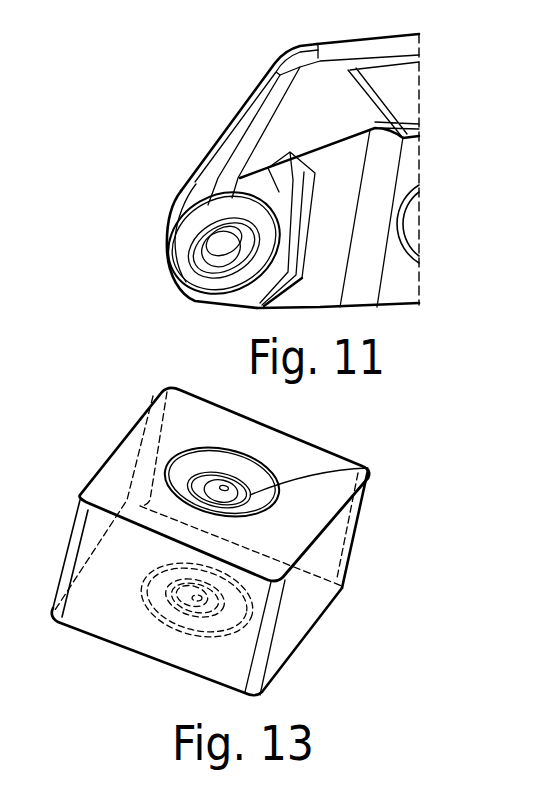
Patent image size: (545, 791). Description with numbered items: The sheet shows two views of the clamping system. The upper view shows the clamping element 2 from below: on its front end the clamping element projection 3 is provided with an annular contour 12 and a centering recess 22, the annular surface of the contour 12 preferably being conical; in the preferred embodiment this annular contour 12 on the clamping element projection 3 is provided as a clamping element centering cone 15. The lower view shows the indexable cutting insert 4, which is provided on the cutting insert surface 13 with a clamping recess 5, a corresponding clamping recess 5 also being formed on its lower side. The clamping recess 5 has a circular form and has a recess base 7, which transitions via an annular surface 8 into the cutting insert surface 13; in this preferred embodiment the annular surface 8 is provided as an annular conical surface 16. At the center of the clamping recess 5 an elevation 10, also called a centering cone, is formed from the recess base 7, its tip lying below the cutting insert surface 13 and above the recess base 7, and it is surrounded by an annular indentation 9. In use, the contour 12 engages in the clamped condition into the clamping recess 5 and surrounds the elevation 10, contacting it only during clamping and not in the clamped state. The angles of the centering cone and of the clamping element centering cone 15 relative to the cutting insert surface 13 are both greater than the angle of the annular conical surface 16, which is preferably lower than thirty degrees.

In FIG. 11, the clamping element 2 is at (397, 93).
In FIG. 11, the clamping element projection 3 is at (221, 178).
In FIG. 11, the threaded bore 22 is at (220, 244).
In FIG. 11, the annular contour 12 is at (190, 243).
In FIG. 11, the clamping element centering cone 15 is at (180, 270).
In FIG. 13, the clamping recess 5 is at (170, 456).
In FIG. 13, the cutting insert surface 13 is at (110, 492).
In FIG. 13, the annular conical surface 16 is at (221, 426).
In FIG. 13, the annular surface 8 is at (217, 463).
In FIG. 13, the elevation 10 is at (228, 486).
In FIG. 13, the recess base 7 is at (368, 468).
In FIG. 13, the cutting insert 4 is at (363, 517).
In FIG. 13, the annular indentation 9 is at (205, 486).